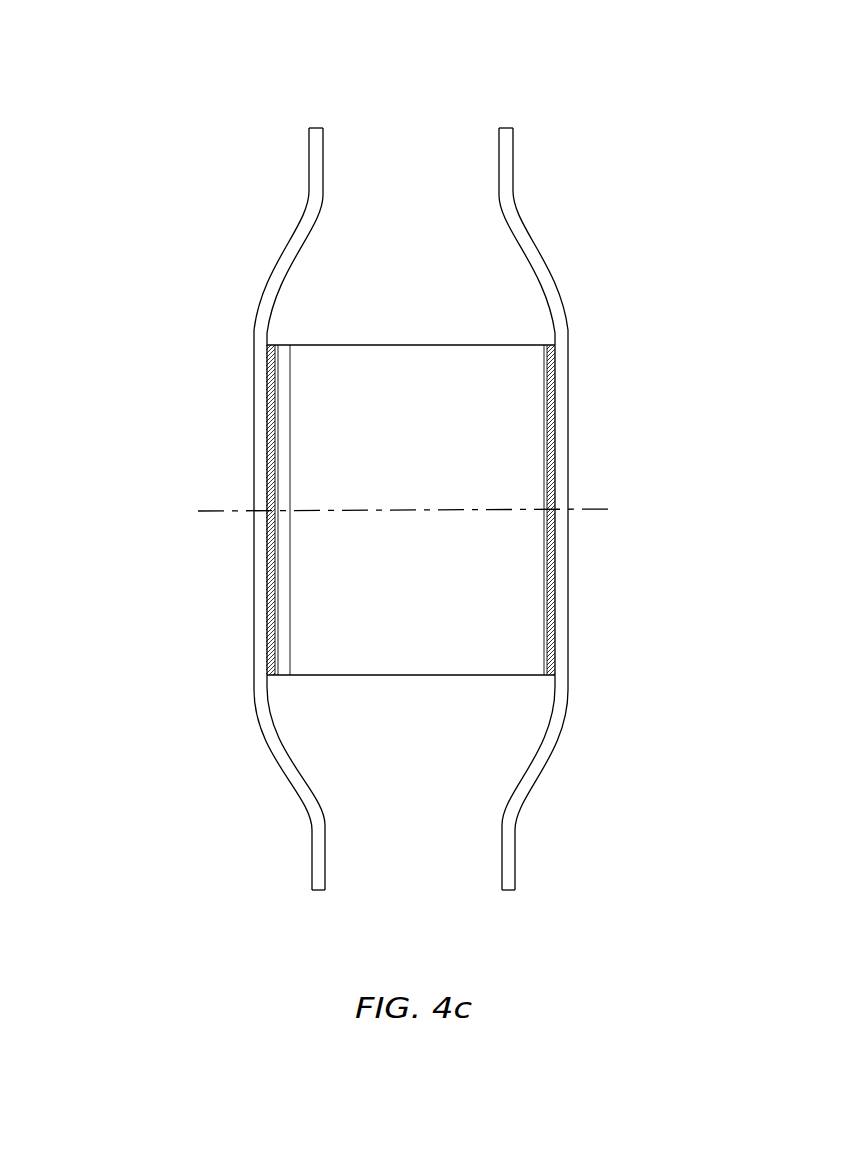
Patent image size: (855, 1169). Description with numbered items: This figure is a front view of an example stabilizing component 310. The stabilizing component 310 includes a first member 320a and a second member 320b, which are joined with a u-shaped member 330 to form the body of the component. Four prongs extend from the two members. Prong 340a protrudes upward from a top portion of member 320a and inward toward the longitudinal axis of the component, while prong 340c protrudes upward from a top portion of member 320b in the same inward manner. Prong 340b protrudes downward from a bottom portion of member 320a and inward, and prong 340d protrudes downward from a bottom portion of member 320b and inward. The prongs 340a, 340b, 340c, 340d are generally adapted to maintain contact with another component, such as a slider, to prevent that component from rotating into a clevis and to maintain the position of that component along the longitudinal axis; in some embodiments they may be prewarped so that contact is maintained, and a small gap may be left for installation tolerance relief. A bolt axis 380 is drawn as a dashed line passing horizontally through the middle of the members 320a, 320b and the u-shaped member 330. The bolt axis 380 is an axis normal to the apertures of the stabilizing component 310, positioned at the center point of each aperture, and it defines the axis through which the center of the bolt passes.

The stabilizing component 310 is at (470, 100).
The member 320a is at (257, 376).
The member 320b is at (568, 425).
The u-shaped member 330 is at (380, 643).
The prong 340a is at (309, 150).
The prong 340b is at (312, 858).
The prong 340c is at (512, 145).
The prong 340d is at (515, 855).
The bolt axis 380 is at (448, 512).